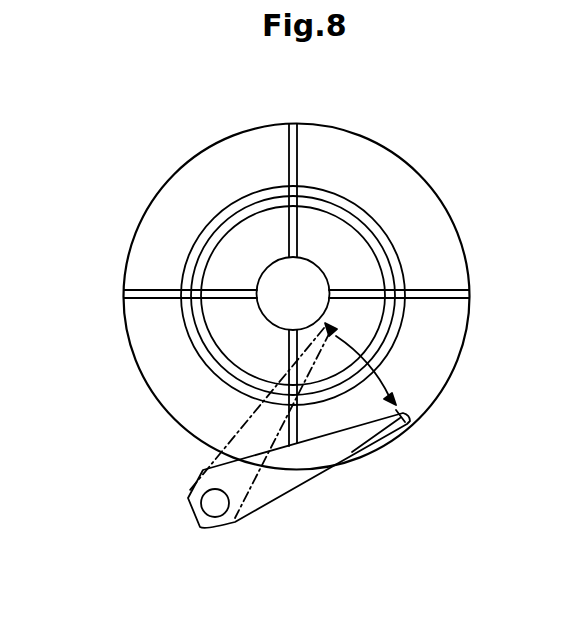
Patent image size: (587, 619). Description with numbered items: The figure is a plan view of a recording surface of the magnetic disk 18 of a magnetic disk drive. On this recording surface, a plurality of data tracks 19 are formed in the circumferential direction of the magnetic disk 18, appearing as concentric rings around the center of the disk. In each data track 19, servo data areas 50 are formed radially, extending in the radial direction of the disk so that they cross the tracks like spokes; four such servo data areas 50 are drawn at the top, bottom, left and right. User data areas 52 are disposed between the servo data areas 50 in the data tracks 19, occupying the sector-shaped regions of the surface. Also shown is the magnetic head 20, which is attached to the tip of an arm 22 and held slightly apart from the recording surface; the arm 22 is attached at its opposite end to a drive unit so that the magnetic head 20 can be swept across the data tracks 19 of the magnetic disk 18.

The magnetic disk 18 is at (423, 171).
The data track 19 is at (330, 187).
The magnetic head 20 is at (407, 420).
The arm 22 is at (276, 501).
The servo data area 50 is at (295, 123).
The user data area 52 is at (205, 165).